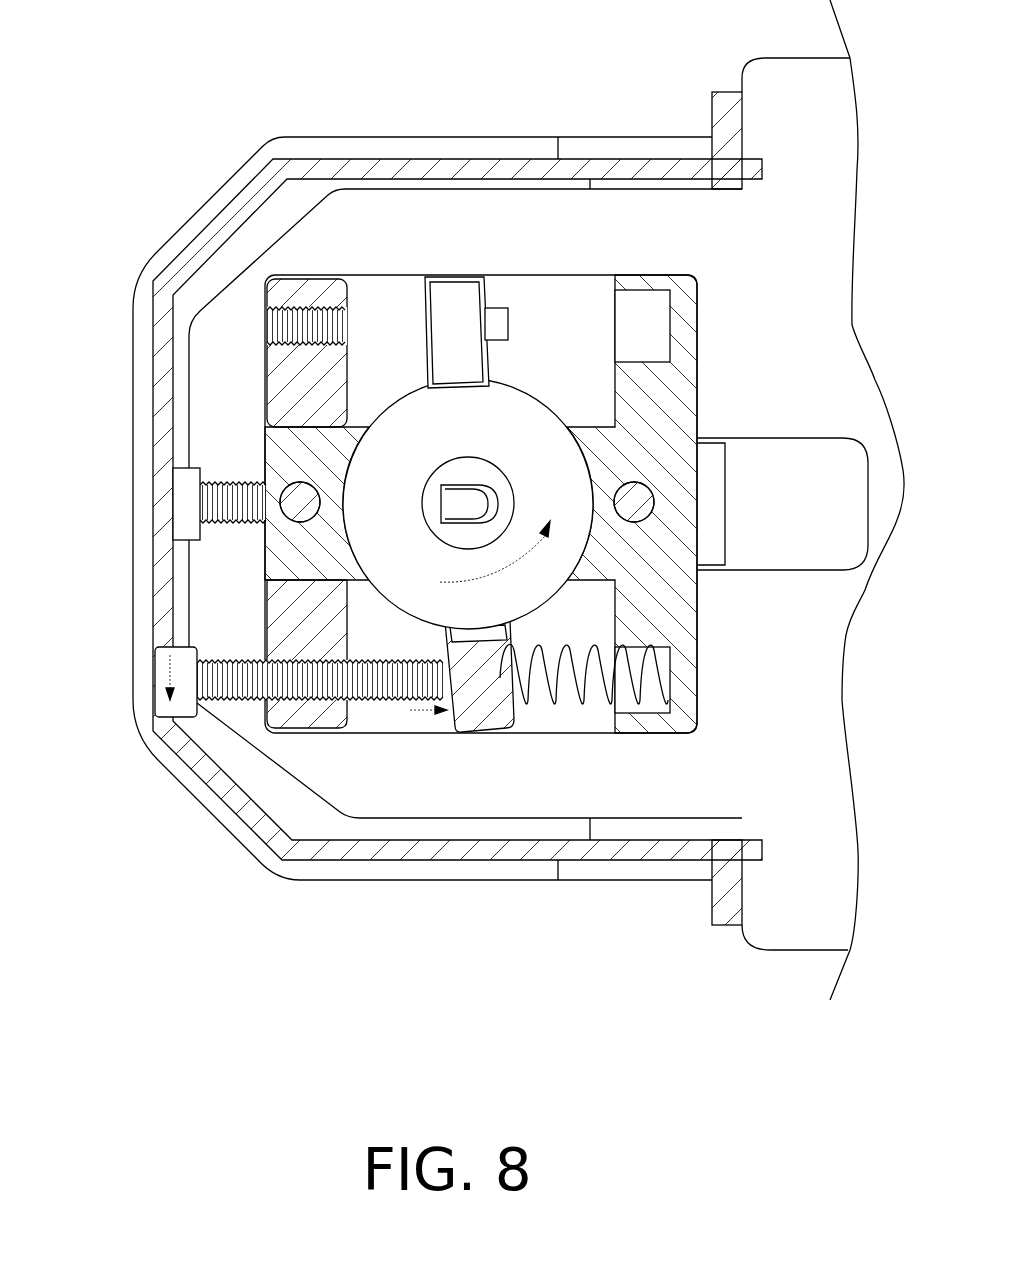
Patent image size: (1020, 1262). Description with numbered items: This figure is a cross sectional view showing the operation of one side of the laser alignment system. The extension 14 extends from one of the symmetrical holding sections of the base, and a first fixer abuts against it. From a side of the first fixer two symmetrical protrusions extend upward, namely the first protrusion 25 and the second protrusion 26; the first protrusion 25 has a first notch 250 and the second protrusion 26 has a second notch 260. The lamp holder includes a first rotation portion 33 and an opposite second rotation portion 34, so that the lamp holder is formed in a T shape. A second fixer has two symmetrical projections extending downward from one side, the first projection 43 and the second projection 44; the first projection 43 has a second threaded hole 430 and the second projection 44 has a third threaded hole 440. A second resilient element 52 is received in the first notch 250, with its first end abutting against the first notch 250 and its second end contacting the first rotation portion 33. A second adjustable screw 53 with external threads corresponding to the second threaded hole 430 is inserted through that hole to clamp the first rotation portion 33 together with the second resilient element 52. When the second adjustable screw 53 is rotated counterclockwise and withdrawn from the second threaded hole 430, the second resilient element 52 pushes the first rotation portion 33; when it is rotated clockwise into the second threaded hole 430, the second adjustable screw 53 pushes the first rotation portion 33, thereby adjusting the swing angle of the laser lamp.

The extension 14 is at (710, 460).
The first protrusion 25 is at (697, 692).
The second protrusion 26 is at (697, 320).
The first rotation portion 33 is at (490, 735).
The second rotation portion 34 is at (460, 297).
The first projection 43 is at (263, 605).
The second projection 44 is at (262, 388).
The second resilient element 52 is at (560, 735).
The second adjustable screw 53 is at (252, 753).
The first notch 250 is at (640, 722).
The second notch 260 is at (637, 313).
The second threaded hole 430 is at (272, 730).
The third threaded hole 440 is at (263, 323).